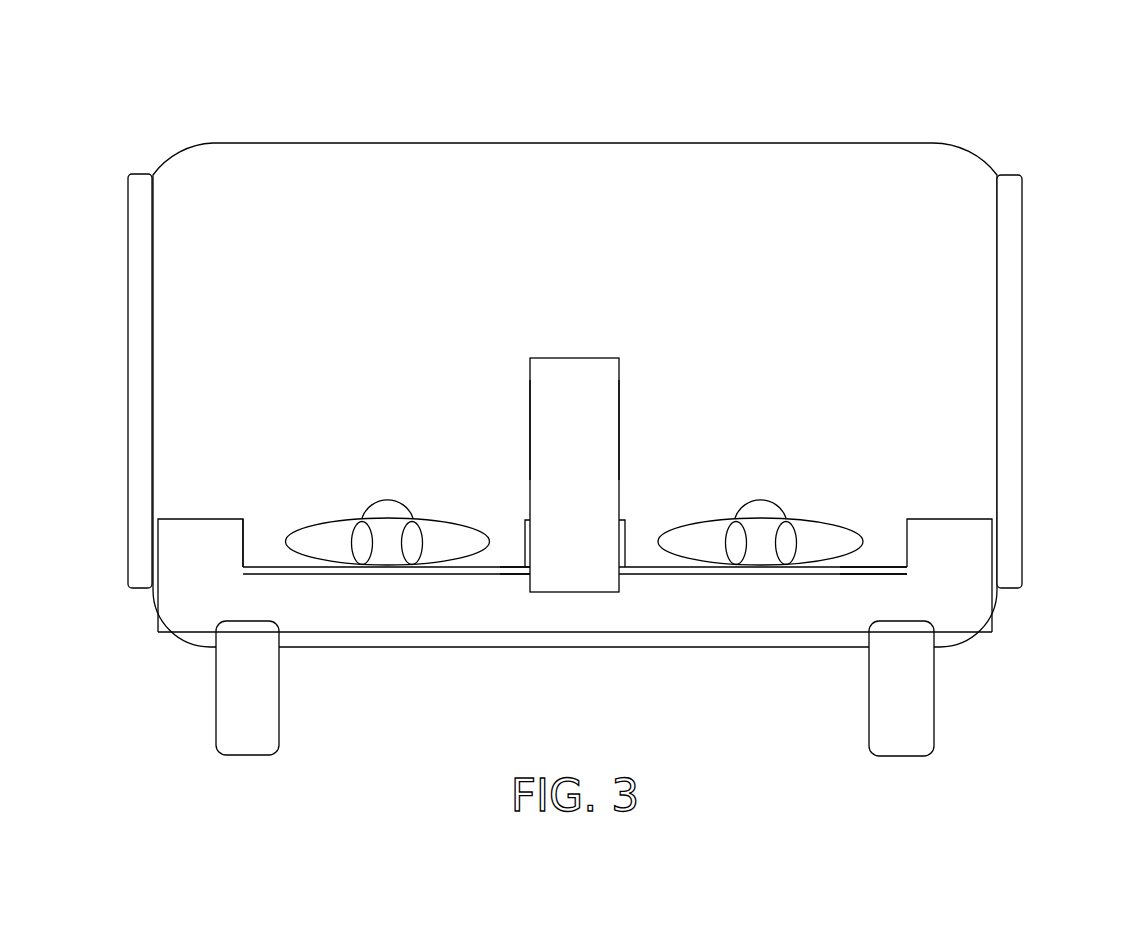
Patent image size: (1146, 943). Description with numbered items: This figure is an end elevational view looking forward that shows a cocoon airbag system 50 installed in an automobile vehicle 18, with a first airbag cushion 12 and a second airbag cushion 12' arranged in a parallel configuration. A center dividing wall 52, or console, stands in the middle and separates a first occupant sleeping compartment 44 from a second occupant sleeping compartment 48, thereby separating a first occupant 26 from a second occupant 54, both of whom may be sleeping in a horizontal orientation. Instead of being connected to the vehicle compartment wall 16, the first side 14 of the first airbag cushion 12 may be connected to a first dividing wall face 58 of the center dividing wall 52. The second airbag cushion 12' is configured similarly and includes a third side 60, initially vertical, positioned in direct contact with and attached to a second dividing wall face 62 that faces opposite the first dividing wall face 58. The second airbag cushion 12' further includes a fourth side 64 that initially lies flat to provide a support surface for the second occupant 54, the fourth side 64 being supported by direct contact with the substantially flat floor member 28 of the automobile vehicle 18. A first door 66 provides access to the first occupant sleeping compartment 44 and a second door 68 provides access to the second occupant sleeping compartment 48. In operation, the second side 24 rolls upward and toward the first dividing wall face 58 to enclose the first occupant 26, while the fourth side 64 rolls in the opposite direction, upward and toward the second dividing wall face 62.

The cocoon airbag system 50 is at (862, 113).
The automobile vehicle 18 is at (1057, 337).
The first door 66 is at (140, 382).
The second door 68 is at (1008, 432).
The first occupant sleeping compartment 44 is at (330, 430).
The second occupant sleeping compartment 48 is at (822, 448).
The vehicle compartment wall 16 is at (247, 518).
The second side 24 is at (283, 565).
The first occupant 26 is at (385, 510).
The second occupant 54 is at (770, 508).
The substantially flat floor member 28 is at (518, 570).
The first side 14 is at (522, 520).
The third side 60 is at (630, 520).
The fourth side 64 is at (633, 567).
The center dividing wall 52 is at (607, 377).
The first dividing wall face 58 is at (530, 408).
The first airbag cushion 12 is at (486, 440).
The second dividing wall face 62 is at (620, 407).
The second airbag cushion 12' is at (678, 432).